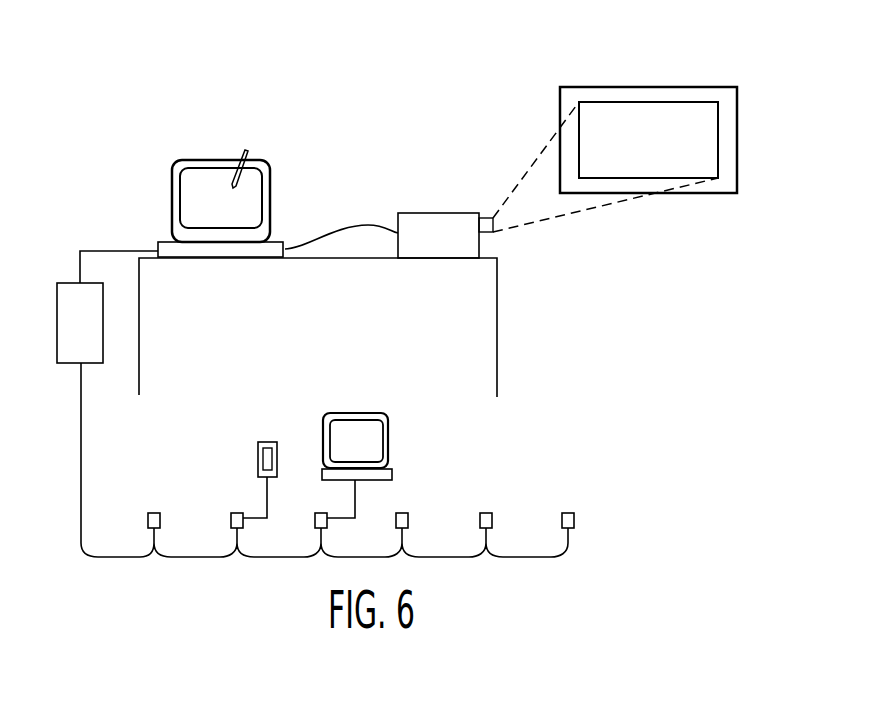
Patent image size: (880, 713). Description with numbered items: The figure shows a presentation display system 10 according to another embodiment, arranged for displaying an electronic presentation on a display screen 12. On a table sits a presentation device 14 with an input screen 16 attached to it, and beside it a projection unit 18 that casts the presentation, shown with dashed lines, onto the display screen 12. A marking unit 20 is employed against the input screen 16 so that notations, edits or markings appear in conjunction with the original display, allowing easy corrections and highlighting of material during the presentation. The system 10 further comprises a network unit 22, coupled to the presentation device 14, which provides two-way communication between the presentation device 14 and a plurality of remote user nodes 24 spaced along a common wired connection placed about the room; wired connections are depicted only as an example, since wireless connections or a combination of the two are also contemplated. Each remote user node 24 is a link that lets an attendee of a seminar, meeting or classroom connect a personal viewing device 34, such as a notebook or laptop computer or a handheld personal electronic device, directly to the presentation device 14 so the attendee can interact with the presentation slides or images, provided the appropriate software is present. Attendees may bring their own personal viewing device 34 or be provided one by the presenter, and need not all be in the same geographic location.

The presentation display system 10 is at (119, 77).
The display screen 12 is at (648, 87).
The presentation device 14 is at (156, 243).
The input screen 16 is at (192, 185).
The projection unit 18 is at (440, 213).
The marking unit 20 is at (241, 149).
The network unit 22 is at (57, 300).
The remote user node 24 is at (148, 516).
The personal viewing device 34 is at (258, 456).